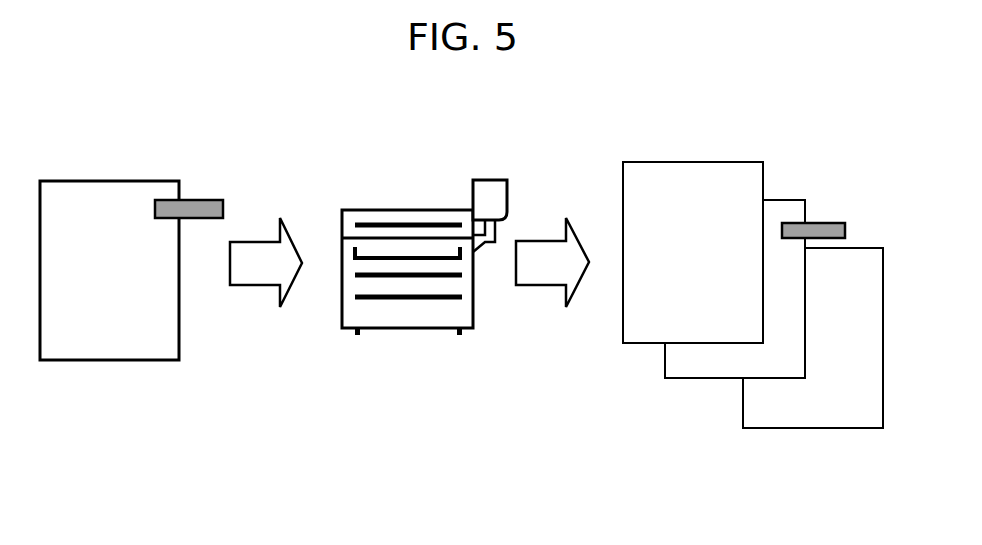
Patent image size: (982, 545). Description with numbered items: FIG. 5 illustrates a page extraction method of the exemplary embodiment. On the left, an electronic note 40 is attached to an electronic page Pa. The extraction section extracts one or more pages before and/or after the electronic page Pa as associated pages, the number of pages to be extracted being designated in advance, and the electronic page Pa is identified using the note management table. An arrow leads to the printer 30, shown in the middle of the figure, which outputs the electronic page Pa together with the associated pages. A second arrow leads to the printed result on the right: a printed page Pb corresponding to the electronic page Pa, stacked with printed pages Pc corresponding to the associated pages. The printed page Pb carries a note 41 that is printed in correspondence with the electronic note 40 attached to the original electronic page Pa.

The printer 30 is at (414, 209).
The electronic note 40 is at (200, 198).
The note 41 is at (822, 222).
The electronic page Pa is at (110, 179).
The printed page Pb is at (782, 199).
The printed pages Pc is at (753, 269).